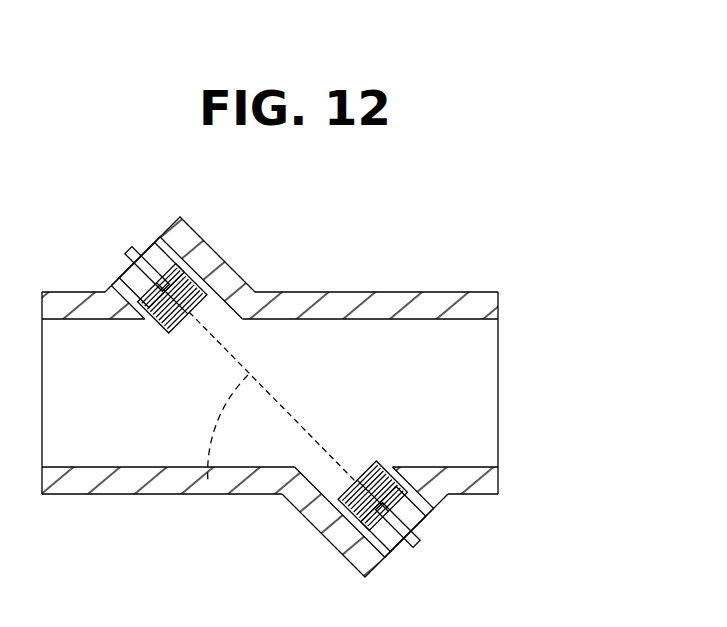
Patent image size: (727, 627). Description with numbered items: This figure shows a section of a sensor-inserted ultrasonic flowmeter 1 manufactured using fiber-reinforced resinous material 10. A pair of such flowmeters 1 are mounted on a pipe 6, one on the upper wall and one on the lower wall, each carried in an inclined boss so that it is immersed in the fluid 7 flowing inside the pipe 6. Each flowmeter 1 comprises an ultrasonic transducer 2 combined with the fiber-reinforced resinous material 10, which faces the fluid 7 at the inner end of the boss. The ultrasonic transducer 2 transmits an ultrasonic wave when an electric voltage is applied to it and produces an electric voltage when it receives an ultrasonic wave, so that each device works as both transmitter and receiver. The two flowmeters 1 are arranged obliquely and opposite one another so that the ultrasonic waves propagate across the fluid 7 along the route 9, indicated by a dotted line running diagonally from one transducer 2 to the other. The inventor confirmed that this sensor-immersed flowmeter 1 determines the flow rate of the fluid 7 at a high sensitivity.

The sensor-immersed ultrasonic flowmeter 1 is at (140, 283).
The ultrasonic transducer 2 is at (190, 266).
The pipe 6 is at (375, 291).
The fluid 7 is at (430, 335).
The route 9 is at (207, 488).
The fiber-reinforced resinous material 10 is at (222, 258).